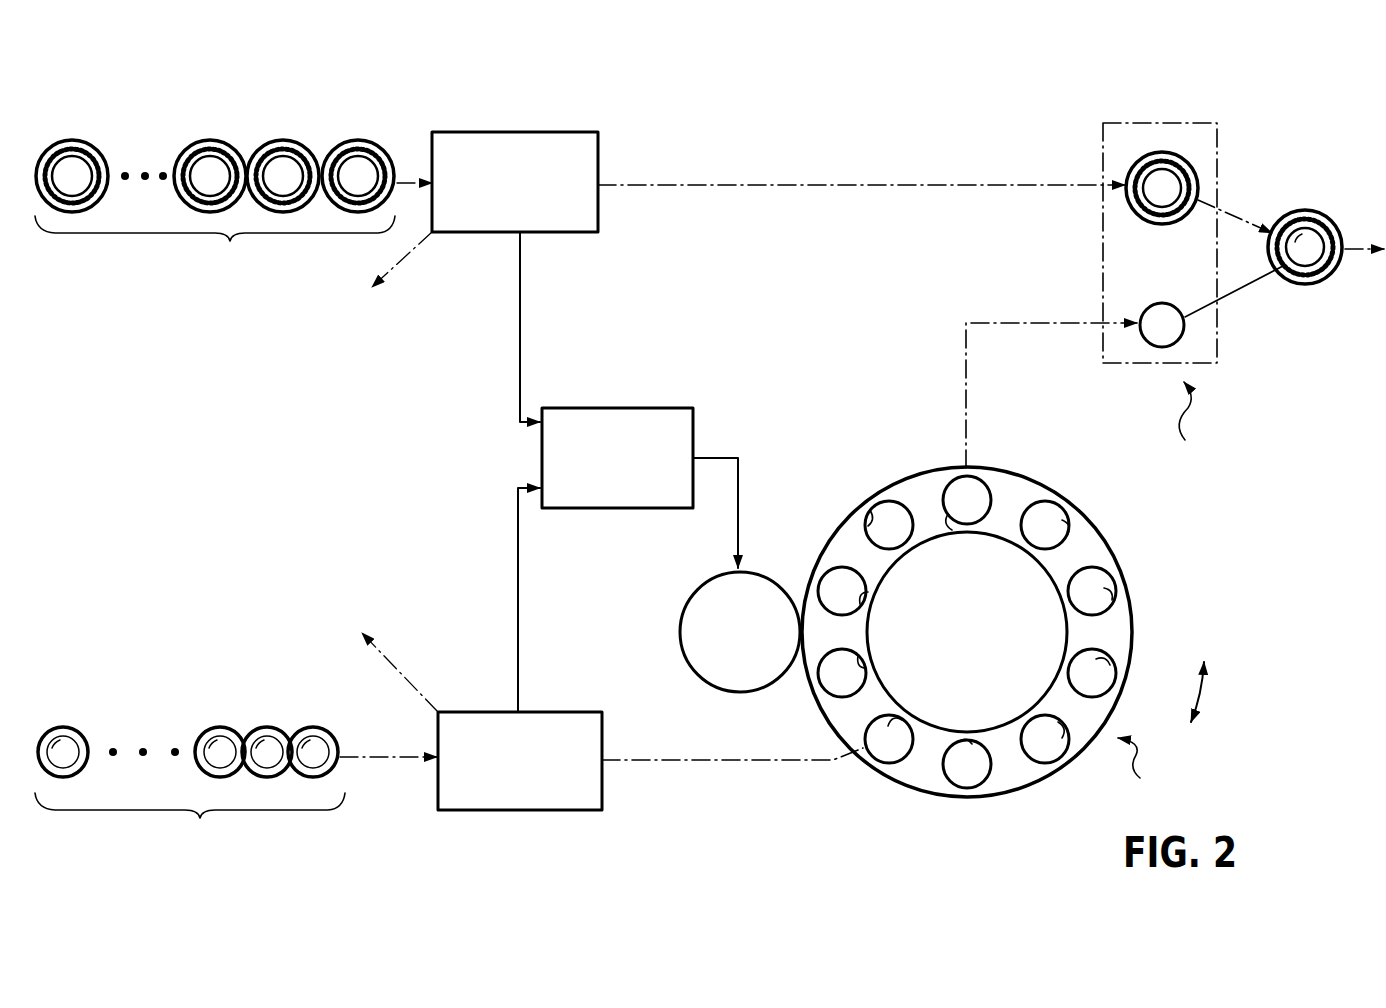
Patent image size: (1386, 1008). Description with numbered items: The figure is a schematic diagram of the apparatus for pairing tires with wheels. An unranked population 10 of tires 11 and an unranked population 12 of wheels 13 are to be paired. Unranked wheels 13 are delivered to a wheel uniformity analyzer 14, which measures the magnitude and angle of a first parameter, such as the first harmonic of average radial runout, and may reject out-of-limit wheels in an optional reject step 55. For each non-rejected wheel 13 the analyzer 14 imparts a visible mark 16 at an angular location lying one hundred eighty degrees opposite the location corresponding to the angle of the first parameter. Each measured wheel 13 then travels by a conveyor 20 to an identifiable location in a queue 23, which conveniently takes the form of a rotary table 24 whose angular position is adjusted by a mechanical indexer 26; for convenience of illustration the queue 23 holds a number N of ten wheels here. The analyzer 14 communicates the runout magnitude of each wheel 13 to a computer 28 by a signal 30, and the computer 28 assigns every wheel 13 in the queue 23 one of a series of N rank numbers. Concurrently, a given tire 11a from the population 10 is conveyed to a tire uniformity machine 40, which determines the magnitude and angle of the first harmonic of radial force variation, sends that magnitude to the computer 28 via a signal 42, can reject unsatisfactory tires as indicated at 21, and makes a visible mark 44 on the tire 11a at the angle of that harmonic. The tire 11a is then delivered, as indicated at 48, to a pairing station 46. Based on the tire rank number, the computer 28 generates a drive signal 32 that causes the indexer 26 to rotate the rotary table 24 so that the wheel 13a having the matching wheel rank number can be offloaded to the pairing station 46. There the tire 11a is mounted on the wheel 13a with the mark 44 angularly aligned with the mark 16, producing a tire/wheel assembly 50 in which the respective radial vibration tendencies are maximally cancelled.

The unranked population of tires 10 is at (230, 241).
The tire 11 is at (372, 152).
The tire 11a is at (1142, 218).
The unranked population of wheels 12 is at (598, 663).
The wheel 13 is at (330, 736).
The wheel 13a is at (1160, 347).
The wheel uniformity analyzer 14 is at (520, 761).
The visible mark 16 is at (870, 508).
The conveyor 20 is at (698, 742).
The tire reject 21 is at (406, 268).
The queue 23 is at (1142, 770).
The rotary table 24 is at (1133, 622).
The indexer 26 is at (740, 680).
The computer 28 is at (617, 458).
The signal 30 is at (519, 590).
The drive signal 32 is at (741, 486).
The tire uniformity machine 40 is at (515, 182).
The signal 42 is at (521, 320).
The visible mark 44 is at (1168, 158).
The pairing station 46 is at (1194, 424).
The tire delivery 48 is at (745, 181).
The tire/wheel assembly 50 is at (1316, 188).
The optional reject step 55 is at (400, 665).